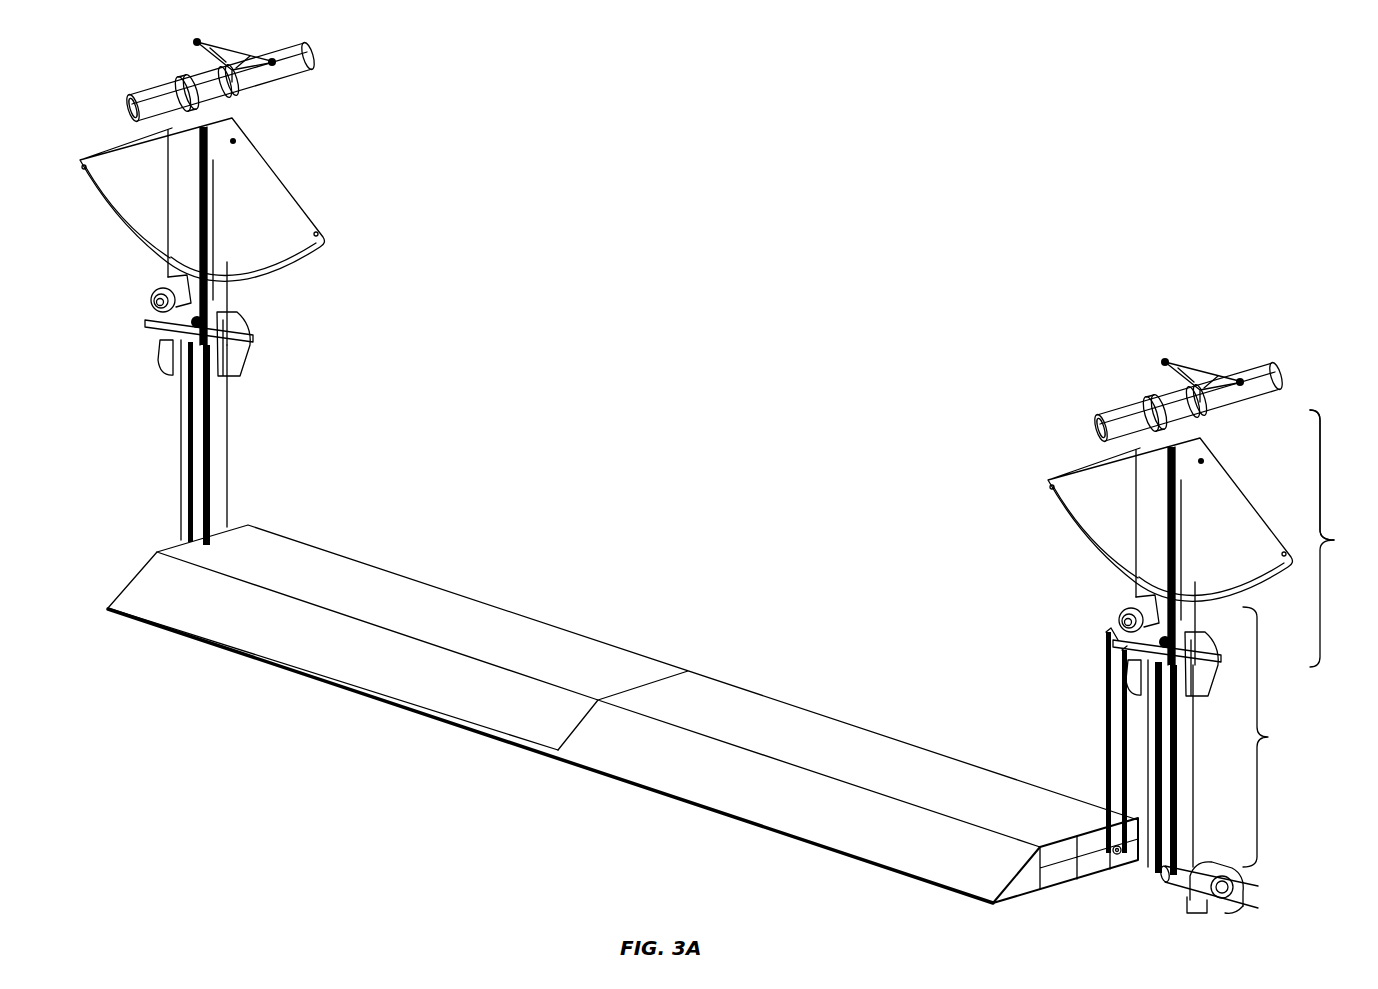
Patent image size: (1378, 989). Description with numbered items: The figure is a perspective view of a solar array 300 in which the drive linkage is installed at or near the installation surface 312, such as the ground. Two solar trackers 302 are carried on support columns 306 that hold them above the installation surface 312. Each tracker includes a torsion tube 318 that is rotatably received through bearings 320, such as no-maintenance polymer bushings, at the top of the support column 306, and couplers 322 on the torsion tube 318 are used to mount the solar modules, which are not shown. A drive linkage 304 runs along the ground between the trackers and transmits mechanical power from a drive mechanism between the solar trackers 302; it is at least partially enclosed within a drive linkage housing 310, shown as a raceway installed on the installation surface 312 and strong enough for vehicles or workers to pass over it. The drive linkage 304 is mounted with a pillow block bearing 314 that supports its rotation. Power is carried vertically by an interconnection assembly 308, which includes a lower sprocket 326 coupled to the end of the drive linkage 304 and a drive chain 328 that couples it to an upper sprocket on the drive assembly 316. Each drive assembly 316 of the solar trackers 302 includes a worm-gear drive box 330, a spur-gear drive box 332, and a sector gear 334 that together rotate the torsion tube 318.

The solar array 300 is at (1237, 172).
The solar trackers 302 is at (370, 274).
The drive linkages 304 is at (1100, 849).
The support columns 306 is at (183, 434).
The interconnection assemblies 308 is at (1278, 737).
The drive linkage housing 310 is at (466, 634).
The installation surface 312 is at (266, 756).
The pillow block bearing 314 is at (1206, 874).
The drive assemblies 316 is at (1344, 538).
The torsion tubes 318 is at (1095, 420).
The bearings 320 is at (1153, 398).
The couplers 322 is at (1175, 376).
The lower sprockets 326 is at (157, 324).
The drive chains 328 is at (1107, 688).
The worm-gear drive box 330 is at (1120, 647).
The spur-gear drive box 332 is at (153, 294).
The sector gear 334 is at (288, 187).